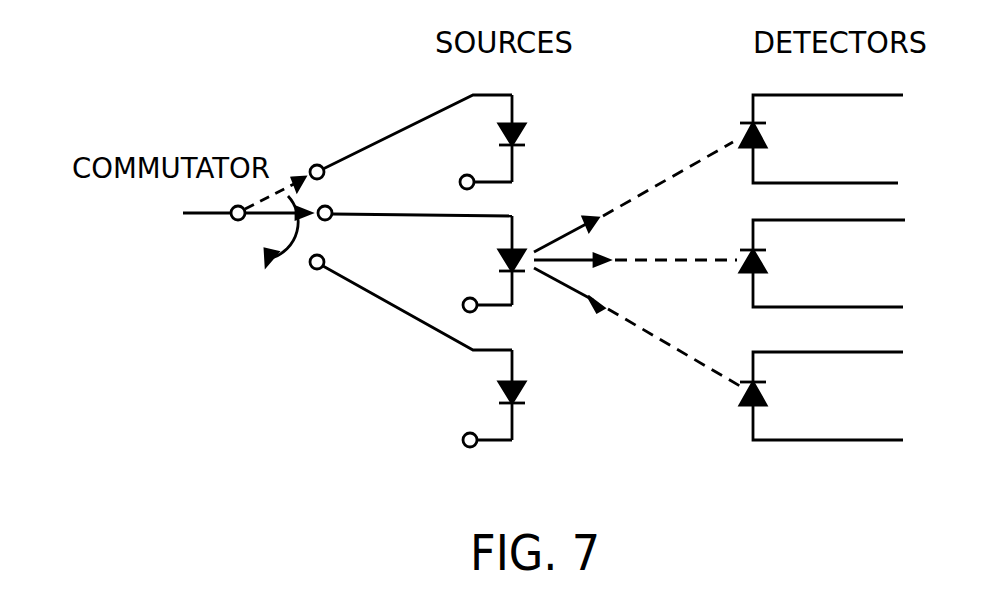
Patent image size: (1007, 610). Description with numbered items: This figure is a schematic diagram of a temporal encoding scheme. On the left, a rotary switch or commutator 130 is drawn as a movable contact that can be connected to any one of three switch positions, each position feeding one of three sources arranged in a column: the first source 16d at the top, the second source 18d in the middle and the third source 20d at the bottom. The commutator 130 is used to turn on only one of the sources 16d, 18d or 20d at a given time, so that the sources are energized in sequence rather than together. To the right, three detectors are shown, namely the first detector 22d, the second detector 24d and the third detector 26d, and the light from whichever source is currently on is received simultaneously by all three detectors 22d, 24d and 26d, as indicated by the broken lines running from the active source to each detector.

The commutator 130 is at (260, 232).
The source S1 16d is at (512, 112).
The source S2 18d is at (515, 240).
The source S3 20d is at (512, 425).
The detector D1 22d is at (755, 165).
The detector D2 24d is at (755, 292).
The detector D3 26d is at (755, 425).